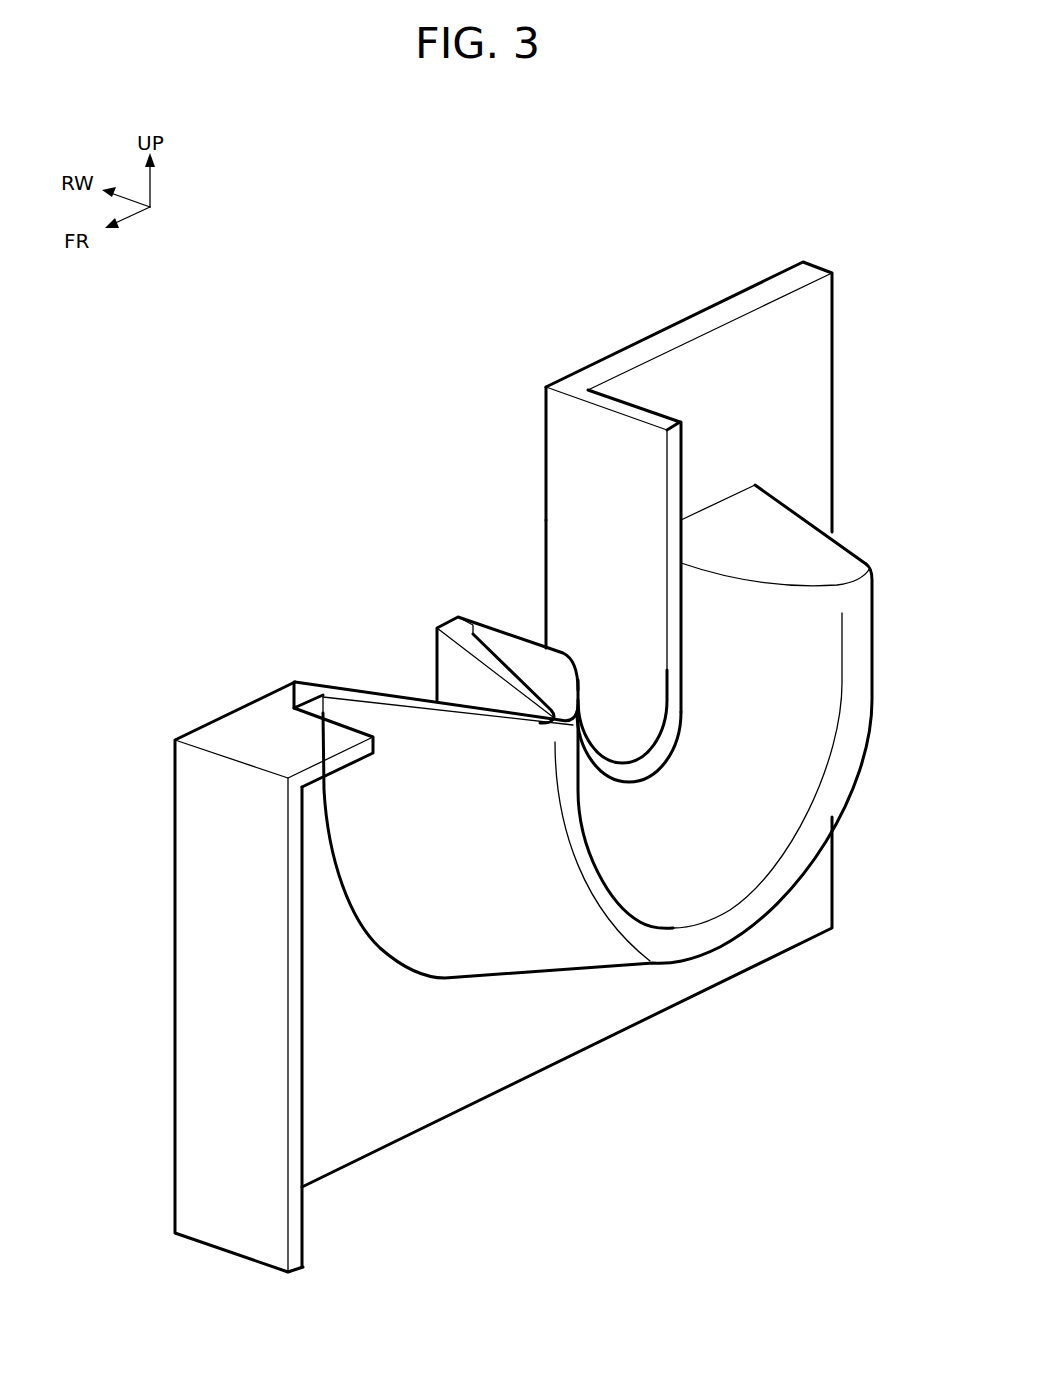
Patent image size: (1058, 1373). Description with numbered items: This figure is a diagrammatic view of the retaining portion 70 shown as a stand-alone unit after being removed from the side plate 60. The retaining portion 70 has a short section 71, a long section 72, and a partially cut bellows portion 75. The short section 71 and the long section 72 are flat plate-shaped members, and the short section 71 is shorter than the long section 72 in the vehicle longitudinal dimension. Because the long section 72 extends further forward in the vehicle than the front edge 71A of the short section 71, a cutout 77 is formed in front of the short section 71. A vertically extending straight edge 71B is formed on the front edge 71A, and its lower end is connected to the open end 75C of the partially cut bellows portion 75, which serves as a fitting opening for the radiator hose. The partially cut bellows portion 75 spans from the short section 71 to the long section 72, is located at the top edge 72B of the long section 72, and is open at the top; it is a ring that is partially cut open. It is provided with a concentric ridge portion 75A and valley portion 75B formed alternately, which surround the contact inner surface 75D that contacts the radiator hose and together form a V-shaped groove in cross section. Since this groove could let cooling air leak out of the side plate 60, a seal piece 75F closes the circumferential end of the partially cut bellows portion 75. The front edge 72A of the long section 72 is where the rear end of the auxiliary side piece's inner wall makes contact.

The side plate 60 is at (503, 751).
The retaining portion 70 is at (340, 347).
The short section 71 is at (730, 345).
The front edge 71A is at (543, 432).
The straight edge 71B is at (543, 520).
The long section 72 is at (415, 1080).
The front edge 72A is at (175, 955).
The top edge 72B is at (232, 710).
The partially cut bellows portion 75 is at (862, 735).
The ridge portion 75A is at (565, 762).
The valley portion 75B is at (455, 618).
The open end 75C is at (607, 633).
The contact inner surface 75D is at (610, 723).
The seal piece 75F is at (785, 525).
The cutout 77 is at (362, 503).